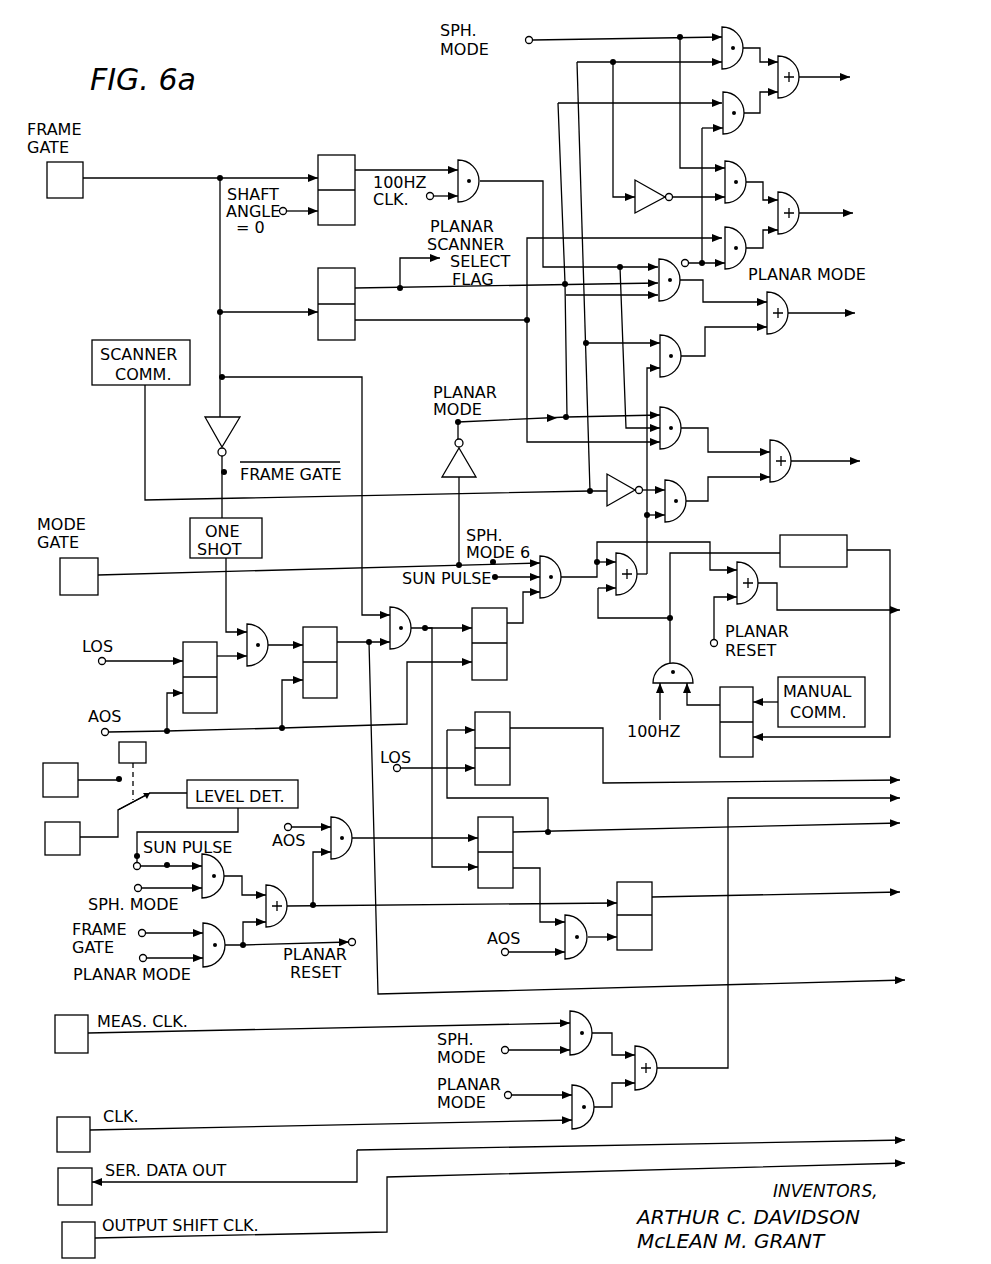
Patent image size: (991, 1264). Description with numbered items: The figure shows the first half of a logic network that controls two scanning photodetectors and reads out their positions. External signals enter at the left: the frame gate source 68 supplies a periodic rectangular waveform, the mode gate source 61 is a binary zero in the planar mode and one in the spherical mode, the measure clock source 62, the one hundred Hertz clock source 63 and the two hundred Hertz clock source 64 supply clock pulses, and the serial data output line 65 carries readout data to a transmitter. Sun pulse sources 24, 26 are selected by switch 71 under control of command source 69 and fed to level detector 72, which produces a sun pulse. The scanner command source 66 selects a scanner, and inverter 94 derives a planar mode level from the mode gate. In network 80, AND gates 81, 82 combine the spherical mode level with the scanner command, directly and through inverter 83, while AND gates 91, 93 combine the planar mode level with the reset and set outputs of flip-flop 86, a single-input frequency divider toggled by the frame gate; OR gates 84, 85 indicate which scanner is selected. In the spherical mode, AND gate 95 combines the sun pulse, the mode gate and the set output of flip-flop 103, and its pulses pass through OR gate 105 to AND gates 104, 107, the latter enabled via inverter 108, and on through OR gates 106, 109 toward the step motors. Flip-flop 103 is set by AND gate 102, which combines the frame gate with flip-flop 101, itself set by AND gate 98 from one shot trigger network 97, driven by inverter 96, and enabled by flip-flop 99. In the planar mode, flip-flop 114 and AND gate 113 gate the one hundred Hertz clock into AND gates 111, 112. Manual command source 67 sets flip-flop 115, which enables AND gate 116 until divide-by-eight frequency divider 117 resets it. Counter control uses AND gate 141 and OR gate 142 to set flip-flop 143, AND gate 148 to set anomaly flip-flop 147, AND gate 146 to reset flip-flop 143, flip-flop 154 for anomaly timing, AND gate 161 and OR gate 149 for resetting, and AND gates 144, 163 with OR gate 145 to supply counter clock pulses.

The frame gate source 68 is at (75, 192).
The mode gate source 61 is at (89, 588).
The sun pulse source 26 is at (71, 792).
The sun pulse source 24 is at (73, 851).
The measure clock source 62 is at (81, 1045).
The 100 Hertz clock source 63 is at (83, 1146).
The serial data output line 65 is at (84, 1198).
The 200 Hertz clock source 64 is at (88, 1251).
The flip-flop 114 is at (345, 156).
The flip-flop 86 is at (340, 268).
The AND gate 113 is at (476, 165).
The scanner command source 66 is at (135, 340).
The inverter 96 is at (238, 430).
The one shot trigger network 97 is at (262, 540).
The flip-flop 99 is at (200, 642).
The AND gate 98 is at (268, 628).
The flip-flop 101 is at (322, 627).
The AND gate 102 is at (400, 650).
The flip-flop 103 is at (472, 614).
The flip-flop 154 is at (490, 712).
The flip-flop 147 is at (478, 834).
The flip-flop 143 is at (640, 882).
The AND gate 146 is at (582, 958).
The AND gate 144 is at (590, 1018).
The OR gate 145 is at (655, 1050).
The AND gate 163 is at (594, 1118).
The AND gate 141 is at (225, 868).
The OR gate 142 is at (285, 918).
The AND gate 161 is at (220, 968).
The AND gate 148 is at (348, 855).
The command source 69 is at (146, 750).
The switch 71 is at (145, 796).
The level detector 72 is at (298, 789).
The network 80 is at (566, 97).
The AND gate 81 is at (735, 37).
The AND gate 93 is at (749, 121).
The OR gate 85 is at (800, 63).
The AND gate 82 is at (746, 167).
The AND gate 91 is at (751, 253).
The OR gate 84 is at (800, 201).
The inverter 83 is at (650, 180).
The AND gate 111 is at (665, 301).
The AND gate 104 is at (675, 335).
The OR gate 106 is at (782, 330).
The AND gate 112 is at (675, 411).
The OR gate 109 is at (786, 446).
The inverter 108 is at (610, 501).
The AND gate 107 is at (689, 512).
The inverter 94 is at (468, 455).
The AND gate 95 is at (554, 558).
The OR gate 105 is at (637, 591).
The OR gate 149 is at (737, 582).
The divide-by-eight frequency divider 117 is at (830, 535).
The AND gate 116 is at (655, 676).
The flip-flop 115 is at (720, 753).
The manual command source 67 is at (843, 677).